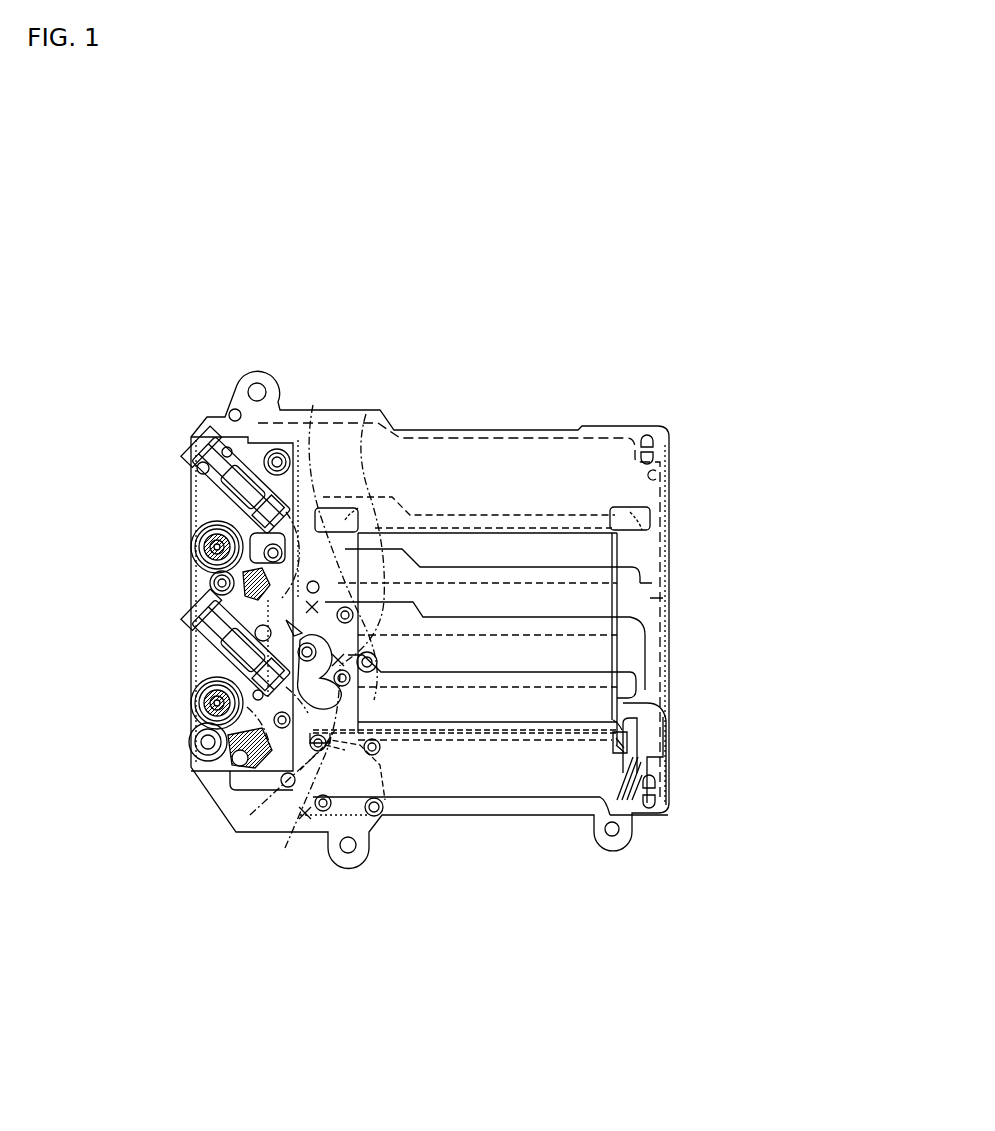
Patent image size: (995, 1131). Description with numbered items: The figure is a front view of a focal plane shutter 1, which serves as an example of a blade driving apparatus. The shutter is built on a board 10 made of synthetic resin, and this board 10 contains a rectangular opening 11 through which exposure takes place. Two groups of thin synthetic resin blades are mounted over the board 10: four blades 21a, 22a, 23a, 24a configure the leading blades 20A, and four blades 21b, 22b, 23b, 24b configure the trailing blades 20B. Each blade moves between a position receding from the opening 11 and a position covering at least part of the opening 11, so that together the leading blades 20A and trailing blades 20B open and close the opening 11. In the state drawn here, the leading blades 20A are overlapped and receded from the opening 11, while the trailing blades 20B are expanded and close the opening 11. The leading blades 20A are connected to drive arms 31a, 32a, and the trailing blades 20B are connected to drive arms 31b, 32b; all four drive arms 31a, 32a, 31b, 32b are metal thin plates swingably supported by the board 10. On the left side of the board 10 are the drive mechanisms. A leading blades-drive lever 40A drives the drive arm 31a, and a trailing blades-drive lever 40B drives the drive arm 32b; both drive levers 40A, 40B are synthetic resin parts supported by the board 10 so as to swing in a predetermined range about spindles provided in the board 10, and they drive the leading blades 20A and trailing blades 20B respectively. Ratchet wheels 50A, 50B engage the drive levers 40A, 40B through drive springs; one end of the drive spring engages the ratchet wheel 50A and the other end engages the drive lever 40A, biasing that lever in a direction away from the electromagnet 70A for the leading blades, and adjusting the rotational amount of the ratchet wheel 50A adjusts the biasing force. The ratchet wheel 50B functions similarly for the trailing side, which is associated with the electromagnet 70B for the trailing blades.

The focal plane shutter 1 is at (648, 362).
The board 10 is at (672, 806).
The opening 11 is at (648, 542).
The leading blades 20A is at (698, 905).
The blade 21a is at (553, 817).
The blade 22a is at (630, 745).
The blade 23a is at (629, 778).
The blade 24a is at (649, 791).
The trailing blades 20B is at (745, 558).
The blade 21b is at (680, 713).
The blade 22b is at (676, 658).
The blade 23b is at (676, 603).
The blade 24b is at (676, 576).
The drive arm 31a is at (285, 848).
The drive arm 31b is at (366, 414).
The drive arm 32a is at (250, 815).
The drive arm 32b is at (313, 405).
The leading blades-drive lever 40A is at (262, 777).
The trailing blades-drive lever 40B is at (200, 576).
The ratchet wheel 50A is at (190, 700).
The ratchet wheel 50B is at (186, 540).
The electromagnet for leading blades 70A is at (200, 622).
The electromagnet for trailing blades 70B is at (204, 478).